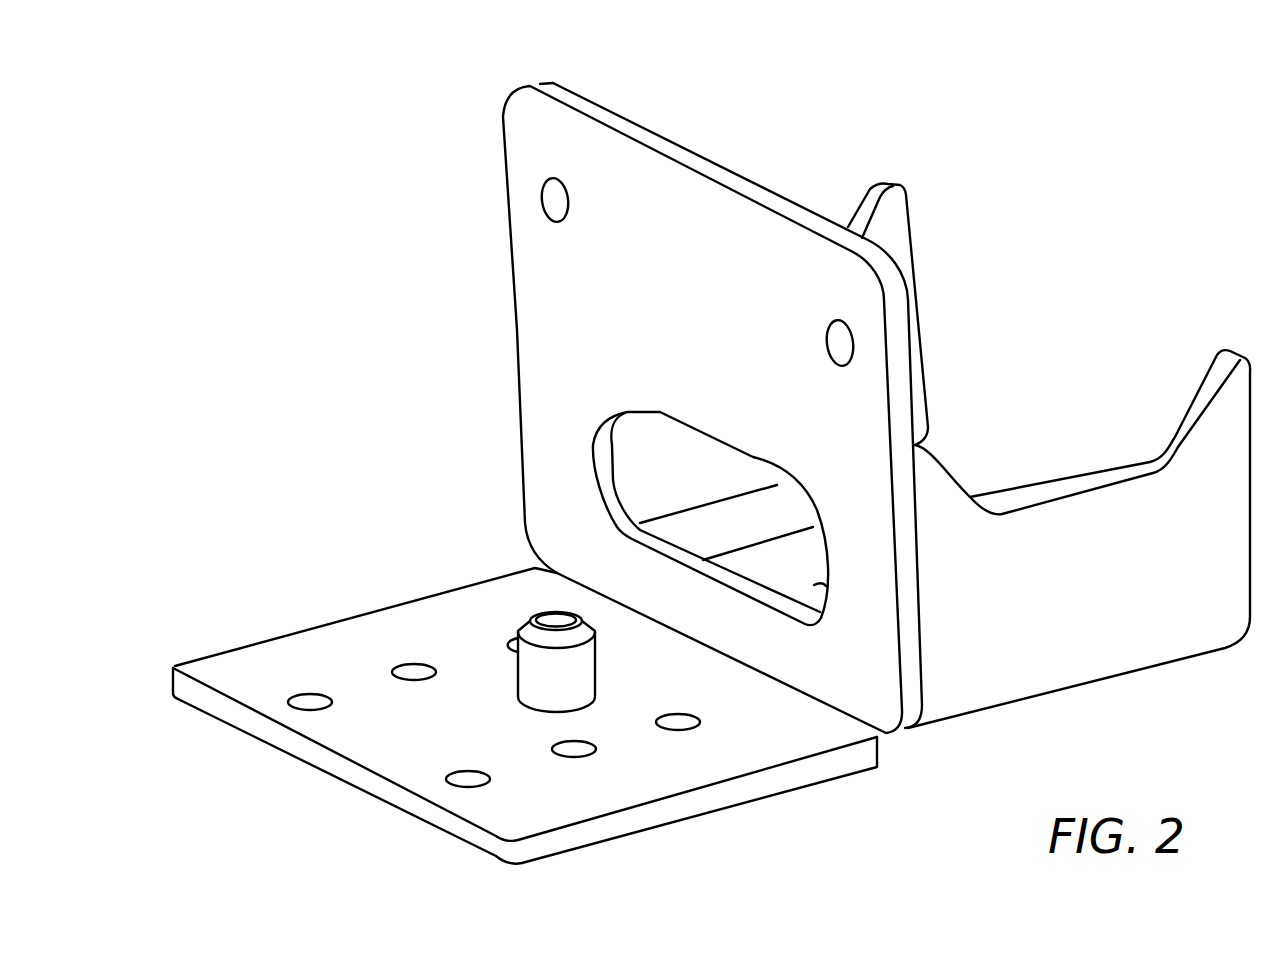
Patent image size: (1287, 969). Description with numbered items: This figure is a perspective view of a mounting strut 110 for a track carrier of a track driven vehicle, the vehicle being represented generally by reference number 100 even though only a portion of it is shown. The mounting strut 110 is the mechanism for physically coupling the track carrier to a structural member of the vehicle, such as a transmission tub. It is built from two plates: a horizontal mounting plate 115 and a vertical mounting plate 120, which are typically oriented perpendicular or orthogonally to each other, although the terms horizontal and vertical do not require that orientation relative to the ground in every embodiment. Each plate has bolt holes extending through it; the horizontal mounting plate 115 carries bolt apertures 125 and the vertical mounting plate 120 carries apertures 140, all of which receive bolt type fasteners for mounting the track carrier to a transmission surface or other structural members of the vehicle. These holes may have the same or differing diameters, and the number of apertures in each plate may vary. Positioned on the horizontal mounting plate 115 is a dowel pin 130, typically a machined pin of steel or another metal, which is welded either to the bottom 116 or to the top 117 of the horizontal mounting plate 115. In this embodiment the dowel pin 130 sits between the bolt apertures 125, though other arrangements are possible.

The vehicle 100 is at (258, 178).
The mounting strut 110 is at (856, 183).
The horizontal mounting plate 115 is at (433, 618).
The bottom of mounting plate 116 is at (772, 798).
The top of mounting plate 117 is at (622, 817).
The vertical mounting plate 120 is at (516, 378).
The bolt apertures 125 is at (407, 680).
The dowel pin 130 is at (595, 640).
The bolt apertures 140 is at (542, 203).